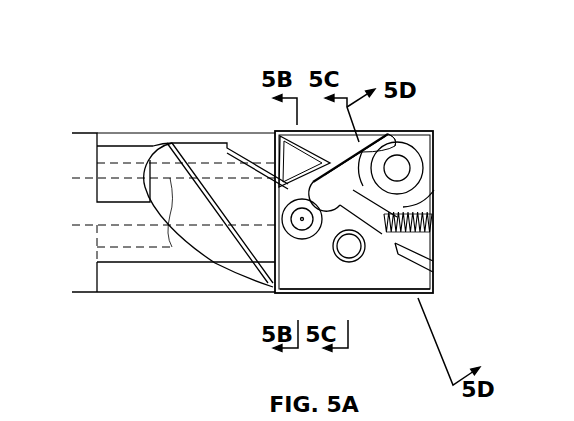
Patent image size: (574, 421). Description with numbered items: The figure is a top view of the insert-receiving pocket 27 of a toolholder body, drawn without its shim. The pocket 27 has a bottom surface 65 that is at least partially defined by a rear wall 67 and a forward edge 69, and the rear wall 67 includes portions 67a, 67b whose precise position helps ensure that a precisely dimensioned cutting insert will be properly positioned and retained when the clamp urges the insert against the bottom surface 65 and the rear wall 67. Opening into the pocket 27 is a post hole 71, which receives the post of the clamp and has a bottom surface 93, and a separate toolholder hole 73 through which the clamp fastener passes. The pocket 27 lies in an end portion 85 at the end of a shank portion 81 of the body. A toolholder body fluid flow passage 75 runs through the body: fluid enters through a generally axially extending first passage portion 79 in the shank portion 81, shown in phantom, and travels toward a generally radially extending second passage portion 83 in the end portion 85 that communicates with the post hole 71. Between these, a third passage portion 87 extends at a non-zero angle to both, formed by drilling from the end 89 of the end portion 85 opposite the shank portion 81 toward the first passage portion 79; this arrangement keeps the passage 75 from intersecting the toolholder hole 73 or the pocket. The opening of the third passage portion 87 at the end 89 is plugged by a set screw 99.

The first passage portion 79 is at (120, 217).
The shank portion 81 is at (118, 138).
The third passage portion 87 is at (248, 210).
The toolholder body fluid flow passage 75 is at (256, 216).
The end 89 is at (435, 275).
The end portion 85 is at (374, 293).
The rear wall 67 is at (404, 152).
The rear wall portion 67a is at (367, 212).
The rear wall portion 67b is at (333, 162).
The insert-receiving pocket 27 is at (420, 145).
The bottom surface 65 is at (433, 146).
The forward edge 69 is at (433, 168).
The set screw 99 is at (436, 228).
The post hole 71 is at (206, 292).
The bottom surface 93 is at (285, 223).
The second passage portion 83 is at (297, 222).
The toolholder hole 73 is at (347, 245).